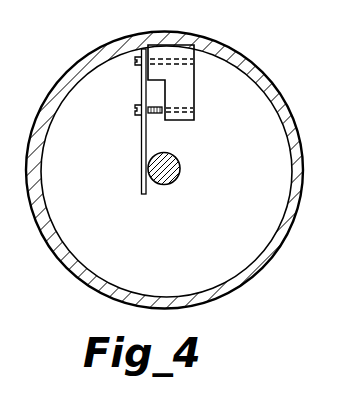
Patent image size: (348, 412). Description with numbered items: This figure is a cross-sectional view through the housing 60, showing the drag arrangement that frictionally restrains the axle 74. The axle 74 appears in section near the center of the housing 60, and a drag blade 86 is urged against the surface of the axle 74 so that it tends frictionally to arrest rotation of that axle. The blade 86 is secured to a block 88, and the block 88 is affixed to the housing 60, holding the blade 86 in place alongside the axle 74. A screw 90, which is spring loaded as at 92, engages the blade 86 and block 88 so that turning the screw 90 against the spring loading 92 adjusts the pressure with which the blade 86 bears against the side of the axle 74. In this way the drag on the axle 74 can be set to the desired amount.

The housing 60 is at (306, 103).
The axle 74 is at (175, 179).
The drag blade 86 is at (141, 146).
The block 88 is at (194, 96).
The screw 90 is at (135, 110).
The spring loading 92 is at (152, 114).